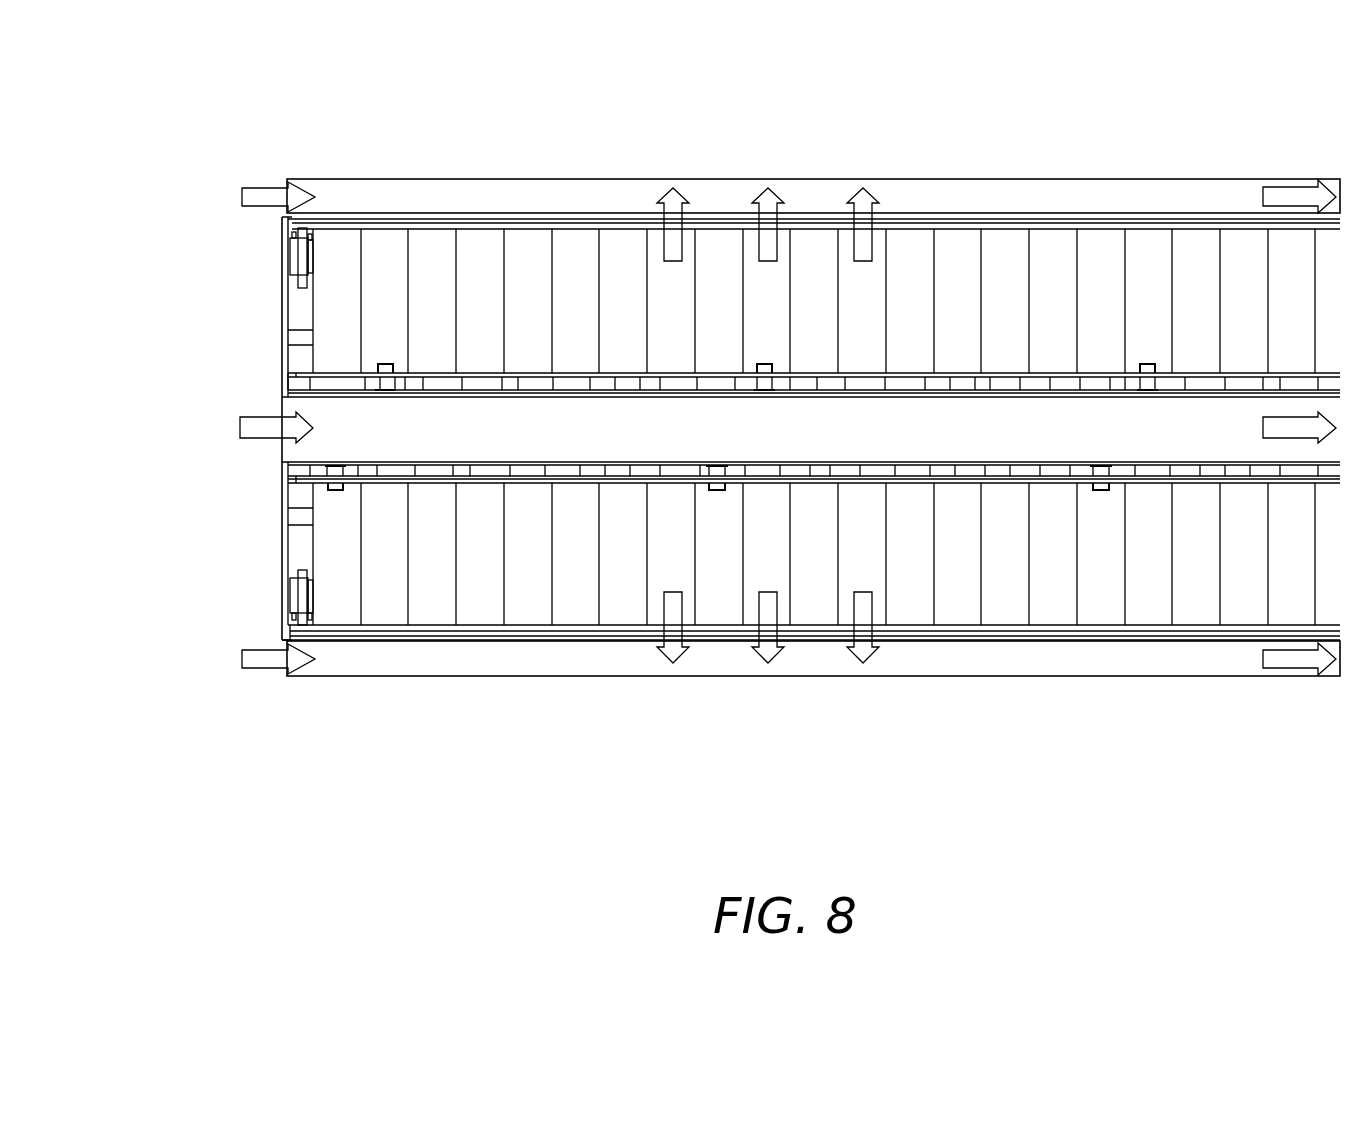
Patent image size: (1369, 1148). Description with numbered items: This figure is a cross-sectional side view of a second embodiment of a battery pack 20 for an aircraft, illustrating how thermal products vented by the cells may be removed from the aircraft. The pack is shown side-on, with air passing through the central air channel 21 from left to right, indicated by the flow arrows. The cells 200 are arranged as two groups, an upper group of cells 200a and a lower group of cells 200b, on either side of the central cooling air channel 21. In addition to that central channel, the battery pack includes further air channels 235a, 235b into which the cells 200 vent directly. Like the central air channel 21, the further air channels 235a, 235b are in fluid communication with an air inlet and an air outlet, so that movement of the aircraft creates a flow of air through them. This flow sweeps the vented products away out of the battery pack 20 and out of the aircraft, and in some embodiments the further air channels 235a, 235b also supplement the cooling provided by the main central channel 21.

The battery pack 20 is at (302, 89).
The central air channel 21 is at (805, 437).
The cells 200 is at (168, 328).
The cells 200a is at (417, 350).
The cells 200b is at (377, 515).
The further air channel 235a is at (425, 192).
The further air channel 235b is at (468, 662).